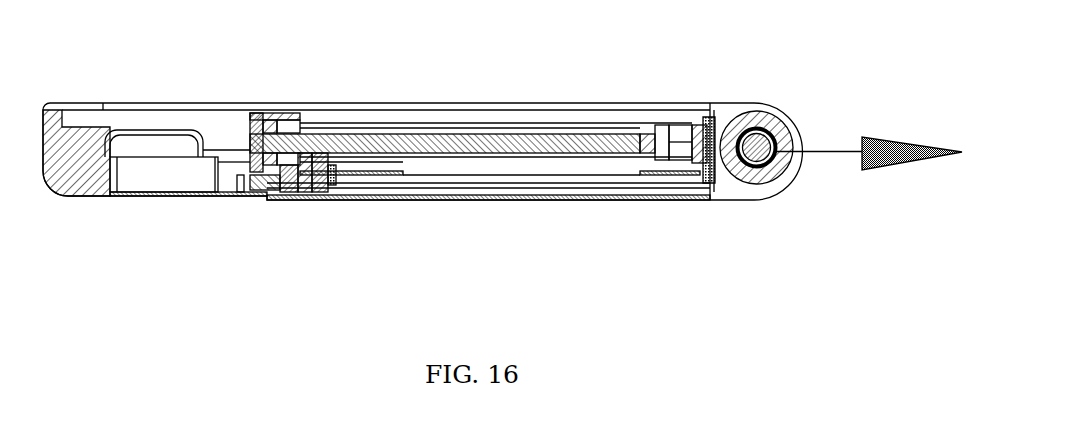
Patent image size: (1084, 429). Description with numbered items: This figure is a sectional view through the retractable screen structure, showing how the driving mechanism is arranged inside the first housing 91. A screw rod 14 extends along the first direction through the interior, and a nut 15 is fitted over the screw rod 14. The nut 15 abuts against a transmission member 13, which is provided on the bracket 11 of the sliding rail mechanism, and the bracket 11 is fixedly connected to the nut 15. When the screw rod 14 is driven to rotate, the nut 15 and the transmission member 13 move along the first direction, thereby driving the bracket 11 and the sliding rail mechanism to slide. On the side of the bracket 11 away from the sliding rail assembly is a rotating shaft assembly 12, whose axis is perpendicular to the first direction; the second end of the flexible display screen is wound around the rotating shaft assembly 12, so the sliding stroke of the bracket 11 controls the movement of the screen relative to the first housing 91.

The bracket 11 is at (683, 185).
The rotating shaft assembly 12 is at (757, 142).
The transmission member 13 is at (322, 180).
The screw rod 14 is at (458, 137).
The nut 15 is at (306, 178).
The first housing 91 is at (137, 178).